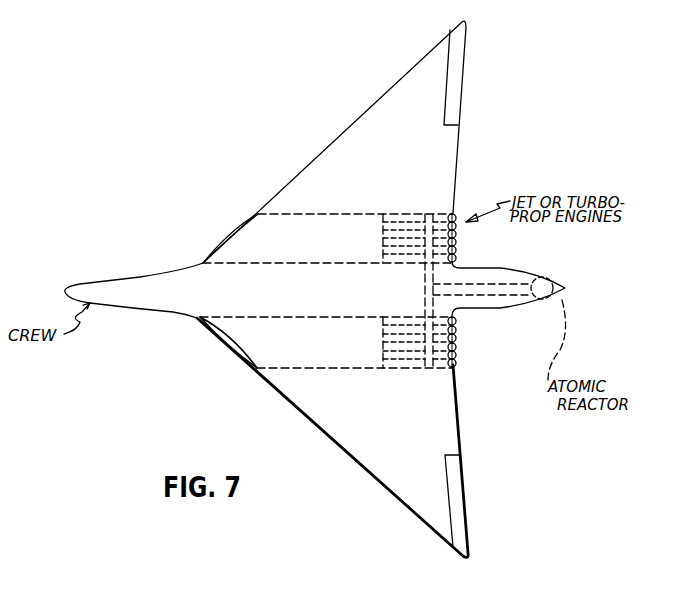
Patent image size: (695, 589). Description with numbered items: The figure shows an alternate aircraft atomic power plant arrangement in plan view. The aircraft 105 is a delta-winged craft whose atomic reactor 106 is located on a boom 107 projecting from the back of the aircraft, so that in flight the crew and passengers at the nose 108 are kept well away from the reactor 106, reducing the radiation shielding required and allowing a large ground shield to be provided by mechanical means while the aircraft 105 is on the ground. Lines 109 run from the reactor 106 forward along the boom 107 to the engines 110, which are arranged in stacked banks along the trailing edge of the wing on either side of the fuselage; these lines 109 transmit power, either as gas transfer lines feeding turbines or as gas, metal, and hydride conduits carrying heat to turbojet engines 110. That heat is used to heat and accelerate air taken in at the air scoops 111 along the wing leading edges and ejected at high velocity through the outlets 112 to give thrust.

The aircraft 105 is at (297, 406).
The atomic reactor 106 is at (552, 279).
The boom 107 is at (507, 308).
The nose 108 is at (104, 290).
The lines 109 is at (478, 286).
The engines 110 is at (455, 222).
The air scoops 111 is at (233, 243).
The outlets 112 is at (454, 240).